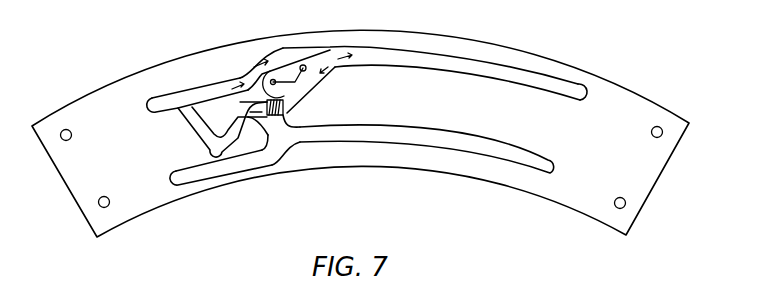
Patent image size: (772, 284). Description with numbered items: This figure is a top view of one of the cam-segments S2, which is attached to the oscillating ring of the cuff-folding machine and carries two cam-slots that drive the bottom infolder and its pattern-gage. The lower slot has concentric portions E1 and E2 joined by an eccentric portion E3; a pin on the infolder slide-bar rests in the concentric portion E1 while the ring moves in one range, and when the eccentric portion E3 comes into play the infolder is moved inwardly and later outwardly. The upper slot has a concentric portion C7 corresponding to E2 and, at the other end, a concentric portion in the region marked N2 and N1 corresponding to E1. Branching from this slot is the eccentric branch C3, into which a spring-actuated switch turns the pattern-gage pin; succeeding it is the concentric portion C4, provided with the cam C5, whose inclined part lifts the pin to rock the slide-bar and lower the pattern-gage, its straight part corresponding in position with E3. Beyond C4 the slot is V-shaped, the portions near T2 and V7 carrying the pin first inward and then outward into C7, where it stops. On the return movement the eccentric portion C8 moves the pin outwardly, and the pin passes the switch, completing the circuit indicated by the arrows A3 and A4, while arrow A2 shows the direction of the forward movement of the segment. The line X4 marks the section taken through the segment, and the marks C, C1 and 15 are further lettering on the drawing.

The concentric portion C7 is at (197, 95).
The eccentric portion C8 is at (257, 56).
The arrow A4 is at (289, 63).
The arrow A3 is at (431, 73).
The right end of upper guide slot C1 is at (557, 86).
The eccentric branch C3 is at (311, 88).
The section line X4 is at (287, 108).
The hook latch C is at (266, 76).
The concentric portion C4 is at (241, 99).
The loop channel outer wall T2 is at (222, 129).
The loop channel inner wall V7 is at (220, 123).
The cam C5 is at (274, 128).
The concentric portion E2 is at (238, 205).
The eccentric portion E3 is at (272, 148).
The concentric portion E1 is at (527, 141).
The plate region between slots N2 is at (385, 80).
The plate region below lower slot N1 is at (420, 156).
The arrow A2 is at (570, 131).
The cam-segment S2 is at (530, 115).
The section line 15 is at (137, 97).